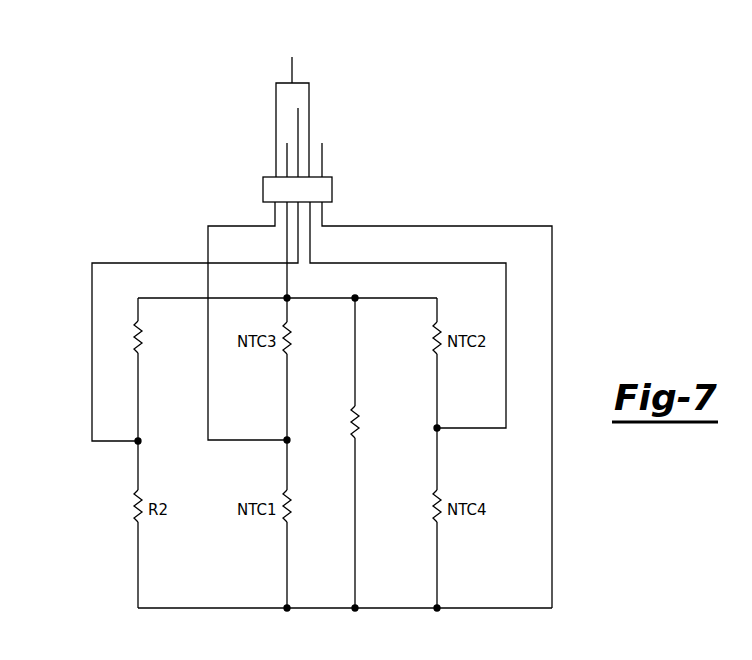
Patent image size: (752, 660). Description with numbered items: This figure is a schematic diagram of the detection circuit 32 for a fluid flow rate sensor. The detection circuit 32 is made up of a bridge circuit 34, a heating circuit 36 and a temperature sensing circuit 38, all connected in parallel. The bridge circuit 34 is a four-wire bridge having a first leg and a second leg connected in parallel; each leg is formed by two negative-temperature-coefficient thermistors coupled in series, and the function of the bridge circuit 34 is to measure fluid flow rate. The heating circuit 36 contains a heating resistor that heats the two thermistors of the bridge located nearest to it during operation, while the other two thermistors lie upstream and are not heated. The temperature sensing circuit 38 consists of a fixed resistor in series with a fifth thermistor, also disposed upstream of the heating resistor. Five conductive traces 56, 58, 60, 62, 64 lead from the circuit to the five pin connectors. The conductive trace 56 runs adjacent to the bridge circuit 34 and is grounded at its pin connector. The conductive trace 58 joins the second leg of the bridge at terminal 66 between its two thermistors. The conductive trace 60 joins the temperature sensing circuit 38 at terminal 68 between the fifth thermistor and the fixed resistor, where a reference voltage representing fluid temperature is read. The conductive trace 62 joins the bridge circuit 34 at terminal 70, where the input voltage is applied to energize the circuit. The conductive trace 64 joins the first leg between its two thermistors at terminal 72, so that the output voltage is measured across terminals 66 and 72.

The detection circuit 32 is at (105, 178).
The bridge circuit 34 is at (461, 620).
The heating circuit 36 is at (367, 460).
The temperature sensing circuit 38 is at (150, 388).
The conductive trace 56 is at (487, 225).
The conductive trace 58 is at (432, 262).
The conductive trace 60 is at (242, 262).
The conductive trace 62 is at (287, 278).
The conductive trace 64 is at (232, 224).
The terminal 66 is at (472, 428).
The terminal 68 is at (115, 443).
The terminal 70 is at (315, 300).
The terminal 72 is at (247, 440).